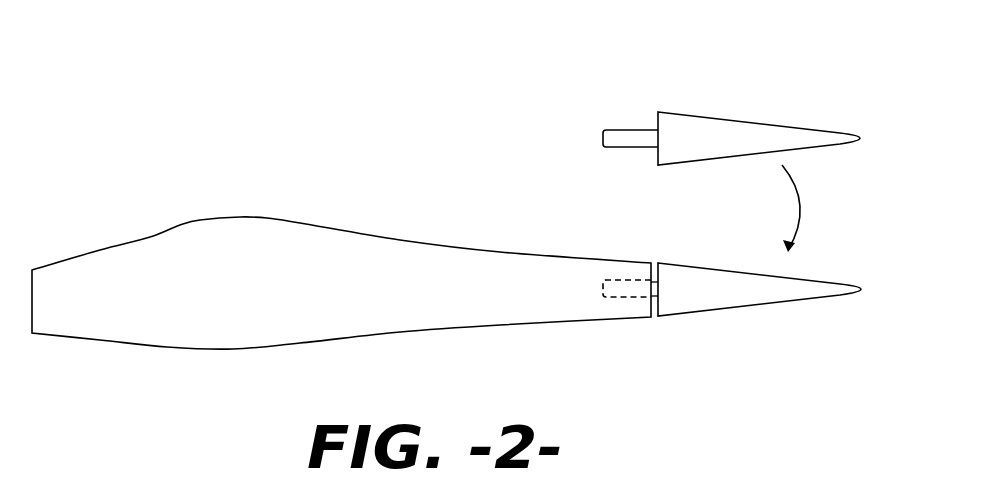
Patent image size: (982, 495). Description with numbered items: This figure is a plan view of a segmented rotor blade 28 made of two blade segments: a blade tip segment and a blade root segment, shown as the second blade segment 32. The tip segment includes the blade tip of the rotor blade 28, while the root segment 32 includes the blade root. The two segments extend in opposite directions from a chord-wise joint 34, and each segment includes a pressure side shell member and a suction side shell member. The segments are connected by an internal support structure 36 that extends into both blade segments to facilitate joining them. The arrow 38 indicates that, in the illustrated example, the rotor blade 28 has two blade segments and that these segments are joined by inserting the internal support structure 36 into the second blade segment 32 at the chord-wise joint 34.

The rotor blade 28 is at (457, 194).
The second blade segment 32 is at (341, 310).
The chord-wise joint 34 is at (651, 318).
The internal support structure 36 is at (628, 130).
The arrow 38 is at (803, 195).